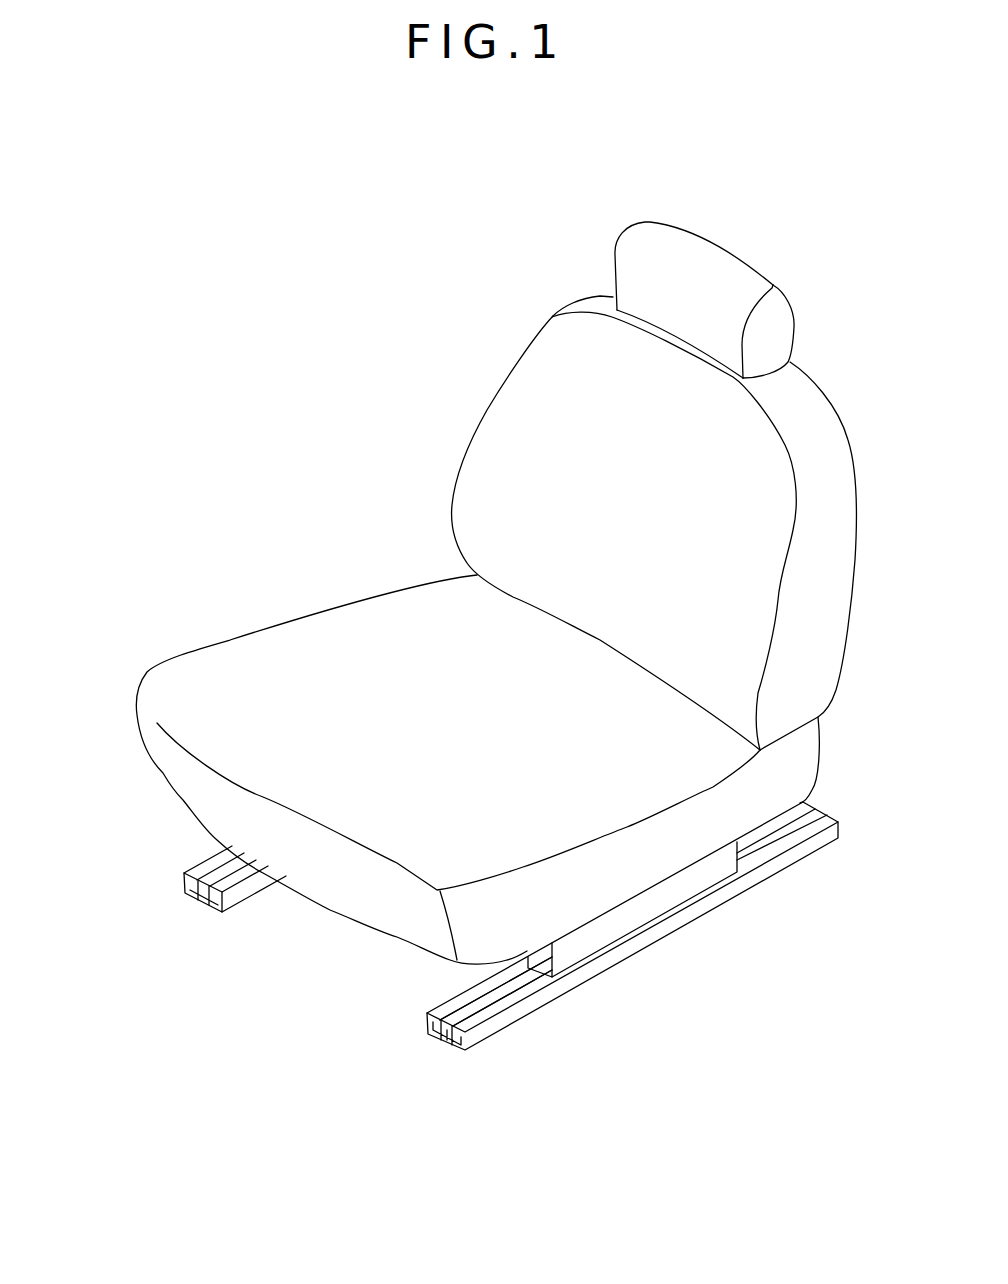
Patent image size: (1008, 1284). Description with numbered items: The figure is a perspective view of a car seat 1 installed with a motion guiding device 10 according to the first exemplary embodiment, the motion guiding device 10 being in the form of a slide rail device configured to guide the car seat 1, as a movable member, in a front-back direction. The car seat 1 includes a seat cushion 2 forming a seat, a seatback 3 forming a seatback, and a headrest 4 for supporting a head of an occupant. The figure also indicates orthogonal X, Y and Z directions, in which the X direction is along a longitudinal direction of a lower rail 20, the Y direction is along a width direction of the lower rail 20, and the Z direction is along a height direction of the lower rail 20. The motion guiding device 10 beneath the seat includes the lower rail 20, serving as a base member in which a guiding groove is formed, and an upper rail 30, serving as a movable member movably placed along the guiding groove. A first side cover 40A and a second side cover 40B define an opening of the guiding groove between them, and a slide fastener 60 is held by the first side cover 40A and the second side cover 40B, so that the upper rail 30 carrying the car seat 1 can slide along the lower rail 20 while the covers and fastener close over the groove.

The car seat 1 is at (788, 305).
The seat cushion 2 is at (303, 630).
The seatback 3 is at (490, 470).
The headrest 4 is at (625, 272).
The motion guiding device 10 is at (167, 862).
The lower rail 20 is at (472, 1053).
The upper rail 30 is at (628, 913).
The first side cover 40A is at (490, 983).
The second side cover 40B is at (543, 983).
The slide fastener 60 is at (474, 1016).